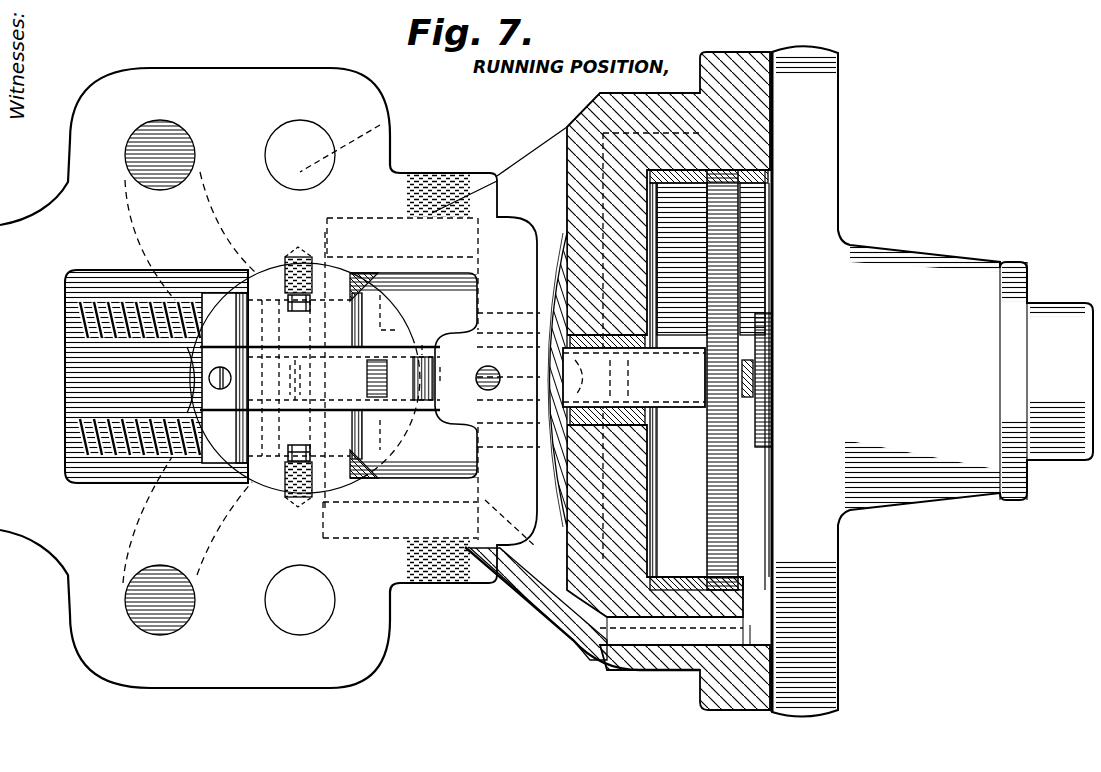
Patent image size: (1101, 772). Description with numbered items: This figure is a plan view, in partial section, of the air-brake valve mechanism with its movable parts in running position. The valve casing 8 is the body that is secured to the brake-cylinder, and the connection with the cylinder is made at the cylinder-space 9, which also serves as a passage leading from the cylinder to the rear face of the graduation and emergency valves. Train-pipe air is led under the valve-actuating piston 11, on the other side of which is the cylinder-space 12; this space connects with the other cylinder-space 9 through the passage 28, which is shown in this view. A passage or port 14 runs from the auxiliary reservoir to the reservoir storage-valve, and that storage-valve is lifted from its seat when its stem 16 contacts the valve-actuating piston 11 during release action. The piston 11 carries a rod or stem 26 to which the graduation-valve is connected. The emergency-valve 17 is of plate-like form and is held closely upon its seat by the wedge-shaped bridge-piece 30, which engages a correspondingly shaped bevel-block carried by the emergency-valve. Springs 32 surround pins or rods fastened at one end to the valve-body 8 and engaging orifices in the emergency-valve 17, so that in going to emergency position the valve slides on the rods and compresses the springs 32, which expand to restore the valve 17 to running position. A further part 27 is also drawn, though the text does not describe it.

The valve casing 8 is at (68, 197).
The cylinder-space 9 is at (121, 297).
The valve-actuating piston 11 is at (708, 478).
The cylinder-space 12 is at (745, 482).
The passage or port 14 is at (477, 379).
The stem 16 is at (780, 380).
The emergency-valve 17 is at (213, 463).
The rod or stem 26 is at (687, 404).
The pawl 27 is at (383, 377).
The passage 28 is at (675, 631).
The wedge-shaped bridge-piece 30 is at (258, 292).
The springs 32 is at (70, 322).